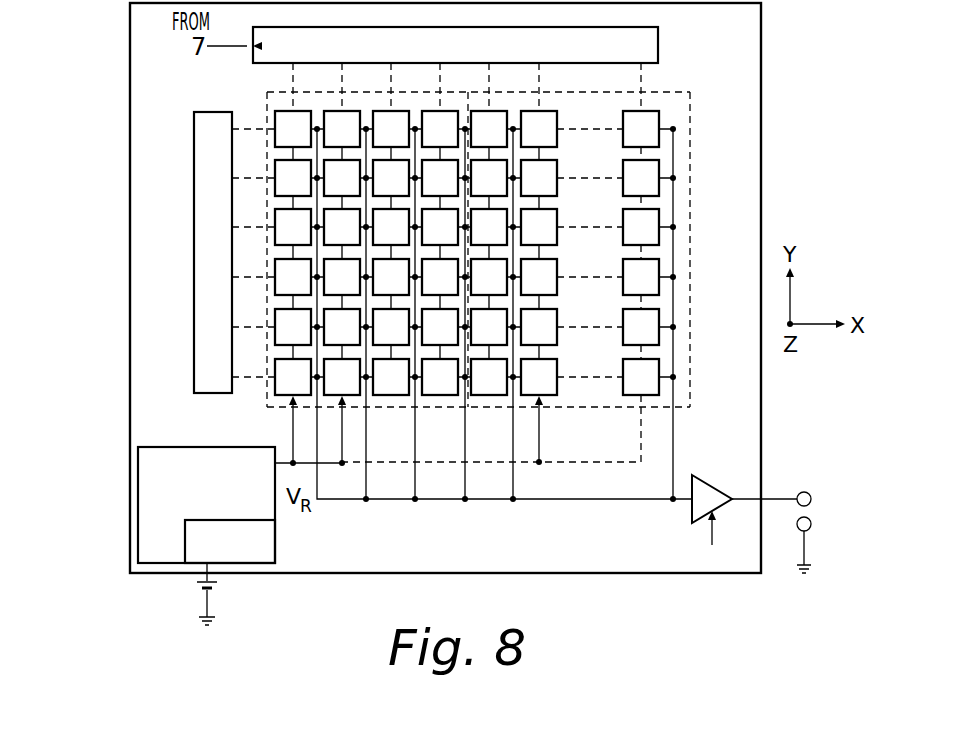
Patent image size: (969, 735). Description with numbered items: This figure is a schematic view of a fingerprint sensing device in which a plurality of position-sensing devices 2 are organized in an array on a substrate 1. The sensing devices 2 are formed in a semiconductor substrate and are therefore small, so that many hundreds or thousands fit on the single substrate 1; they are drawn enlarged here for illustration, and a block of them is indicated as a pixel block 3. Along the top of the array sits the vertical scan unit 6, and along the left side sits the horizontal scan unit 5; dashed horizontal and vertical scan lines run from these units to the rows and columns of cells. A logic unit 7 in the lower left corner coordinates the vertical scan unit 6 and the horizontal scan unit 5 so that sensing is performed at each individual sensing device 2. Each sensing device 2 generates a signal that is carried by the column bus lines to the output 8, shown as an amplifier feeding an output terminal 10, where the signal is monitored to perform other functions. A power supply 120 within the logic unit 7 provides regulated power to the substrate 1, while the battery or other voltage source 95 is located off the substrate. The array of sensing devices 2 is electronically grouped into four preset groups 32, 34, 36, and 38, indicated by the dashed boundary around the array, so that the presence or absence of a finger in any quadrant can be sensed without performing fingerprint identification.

The substrate 1 is at (762, 100).
The position-sensing device 2 is at (437, 108).
The pixel block 3 is at (570, 113).
The horizontal scan unit 5 is at (194, 281).
The vertical scan unit 6 is at (658, 46).
The logic unit 7 is at (150, 524).
The output 8 is at (702, 482).
The output terminal 10 is at (810, 490).
The preset group 32 is at (673, 108).
The preset group 34 is at (276, 102).
The preset group 36 is at (276, 351).
The preset group 38 is at (682, 396).
The voltage source 95 is at (207, 598).
The power supply 120 is at (275, 539).